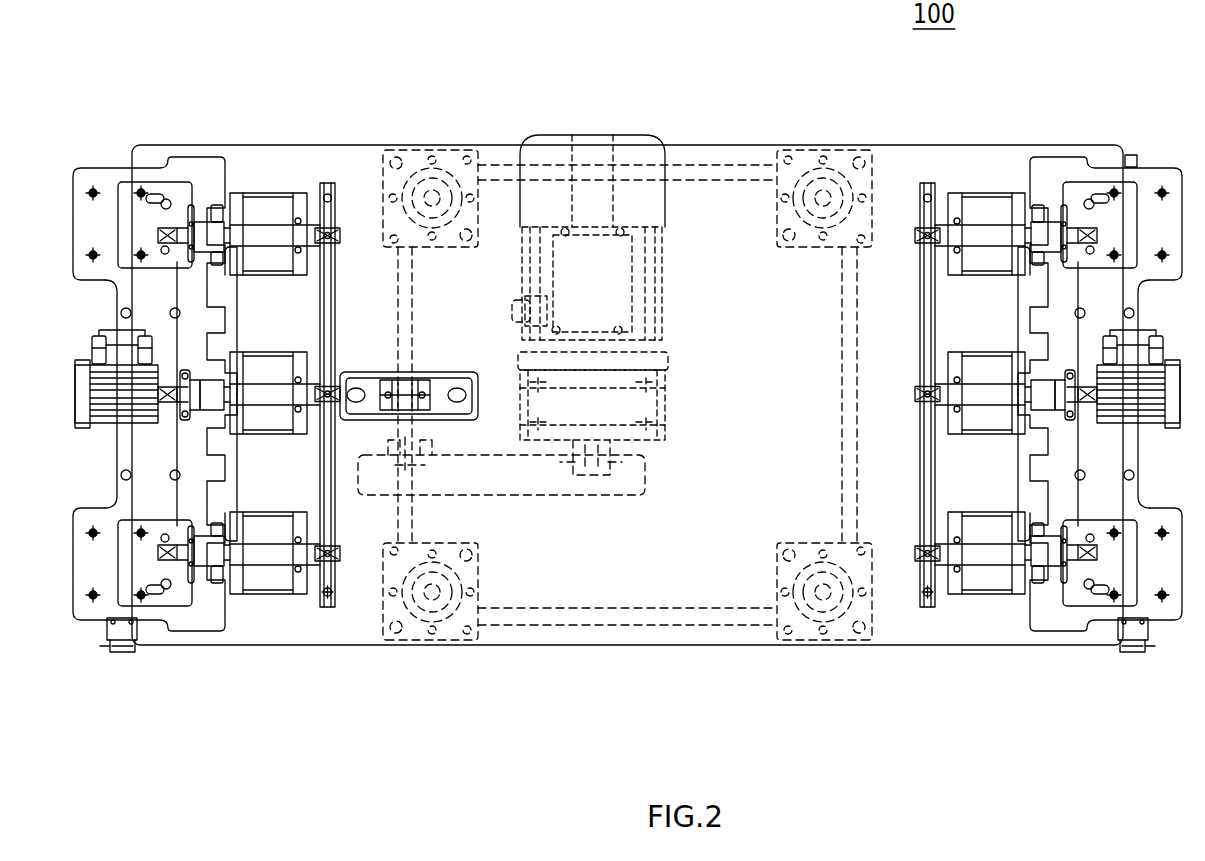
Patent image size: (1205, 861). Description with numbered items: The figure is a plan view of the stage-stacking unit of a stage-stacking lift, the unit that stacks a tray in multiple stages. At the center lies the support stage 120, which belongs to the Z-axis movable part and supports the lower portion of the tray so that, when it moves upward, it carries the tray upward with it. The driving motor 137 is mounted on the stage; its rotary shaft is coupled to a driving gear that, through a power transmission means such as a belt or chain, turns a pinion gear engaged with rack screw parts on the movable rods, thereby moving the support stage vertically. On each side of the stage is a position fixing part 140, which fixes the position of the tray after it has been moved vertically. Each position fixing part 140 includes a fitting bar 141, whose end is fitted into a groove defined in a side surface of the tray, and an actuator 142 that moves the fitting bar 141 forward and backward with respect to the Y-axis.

The support stage 120 is at (705, 540).
The driving motor 137 is at (597, 263).
The position fixing part 140 is at (246, 112).
The fitting bar 141 is at (327, 185).
The actuator 142 is at (270, 210).